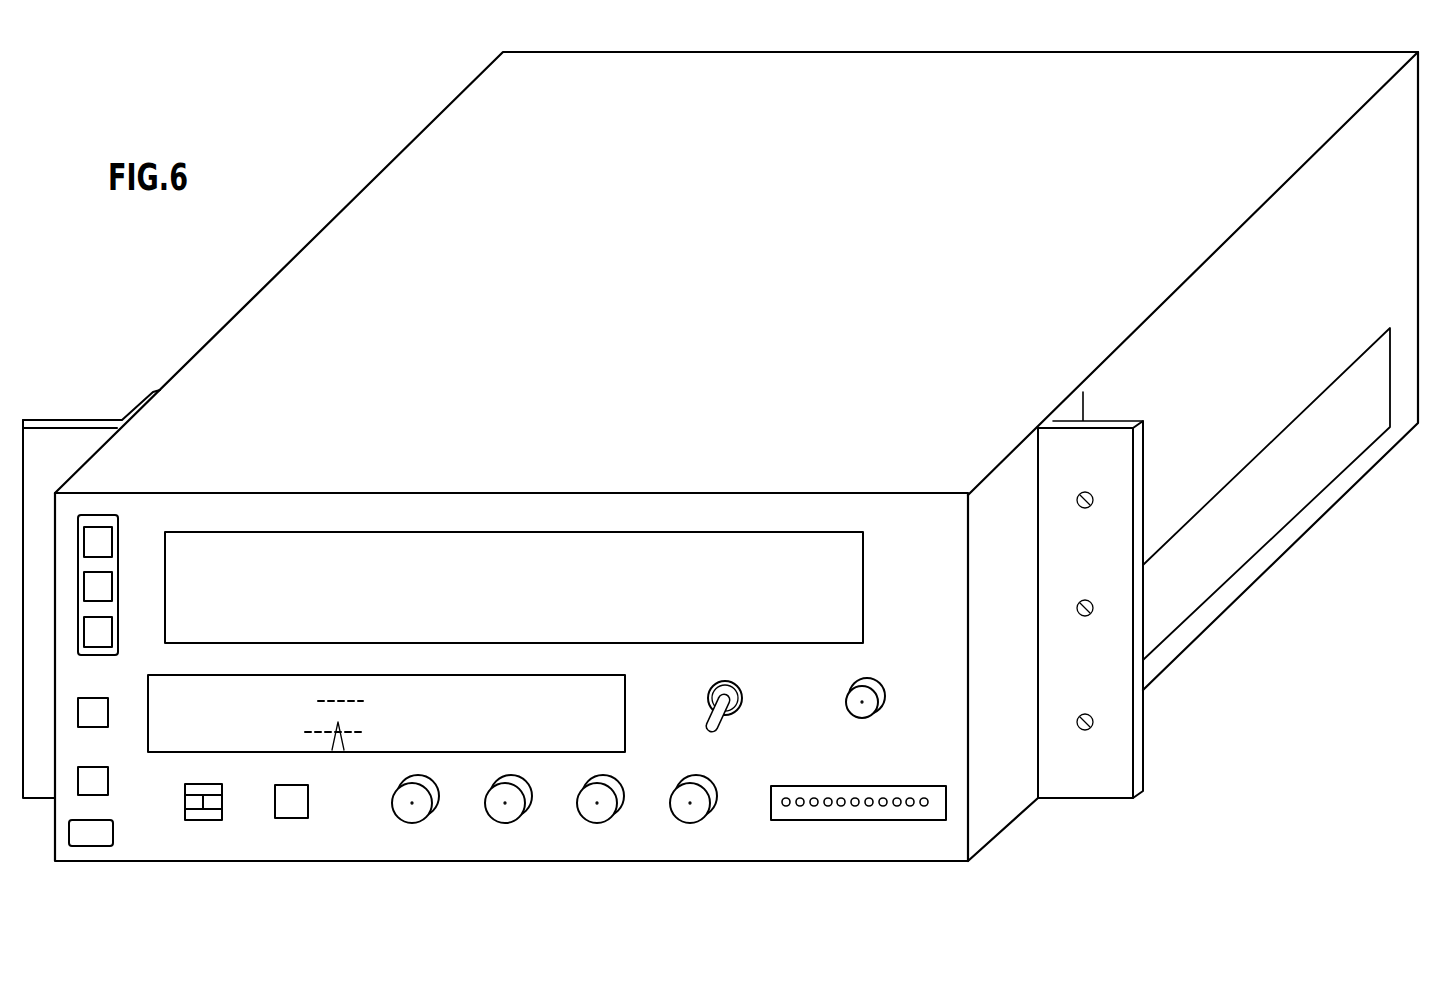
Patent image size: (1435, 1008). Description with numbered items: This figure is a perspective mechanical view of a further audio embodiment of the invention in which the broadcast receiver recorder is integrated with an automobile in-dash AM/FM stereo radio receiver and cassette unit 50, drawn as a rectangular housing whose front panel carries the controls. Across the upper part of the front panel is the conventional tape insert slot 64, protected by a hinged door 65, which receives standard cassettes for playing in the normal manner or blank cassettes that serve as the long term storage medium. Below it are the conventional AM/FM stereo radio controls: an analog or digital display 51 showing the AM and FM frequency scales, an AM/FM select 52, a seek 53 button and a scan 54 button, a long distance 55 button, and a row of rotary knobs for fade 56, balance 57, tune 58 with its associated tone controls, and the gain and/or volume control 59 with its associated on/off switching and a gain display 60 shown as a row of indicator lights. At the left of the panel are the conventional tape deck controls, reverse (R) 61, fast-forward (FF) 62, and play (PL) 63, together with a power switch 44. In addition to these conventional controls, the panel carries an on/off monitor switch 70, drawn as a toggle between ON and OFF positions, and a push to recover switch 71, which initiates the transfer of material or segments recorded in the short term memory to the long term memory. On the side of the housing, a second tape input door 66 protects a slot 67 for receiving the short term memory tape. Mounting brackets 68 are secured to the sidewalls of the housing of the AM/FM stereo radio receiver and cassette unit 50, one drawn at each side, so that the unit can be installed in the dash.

The power switch 44 is at (66, 836).
The AM/FM stereo radio receiver and cassette unit 50 is at (421, 157).
The analog or digital display 51 is at (483, 687).
The AM/FM select 52 is at (200, 820).
The seek 53 is at (82, 714).
The scan 54 is at (82, 782).
The long distance 55 is at (275, 808).
The fade 56 is at (395, 806).
The balance 57 is at (487, 806).
The tune 58 is at (580, 806).
The gain and/or volume control 59 is at (673, 806).
The gain display 60 is at (780, 820).
The reverse (R) 61 is at (88, 546).
The fast-forward (FF) 62 is at (88, 590).
The play (PL) 63 is at (88, 635).
The tape insert slot 64 is at (645, 535).
The hinged door 65 is at (522, 548).
The second tape input door 66 is at (1272, 518).
The slot 67 is at (1318, 488).
The mounting brackets 68 is at (82, 420).
The on/off monitor switch 70 is at (712, 697).
The push to recover switch 71 is at (855, 689).